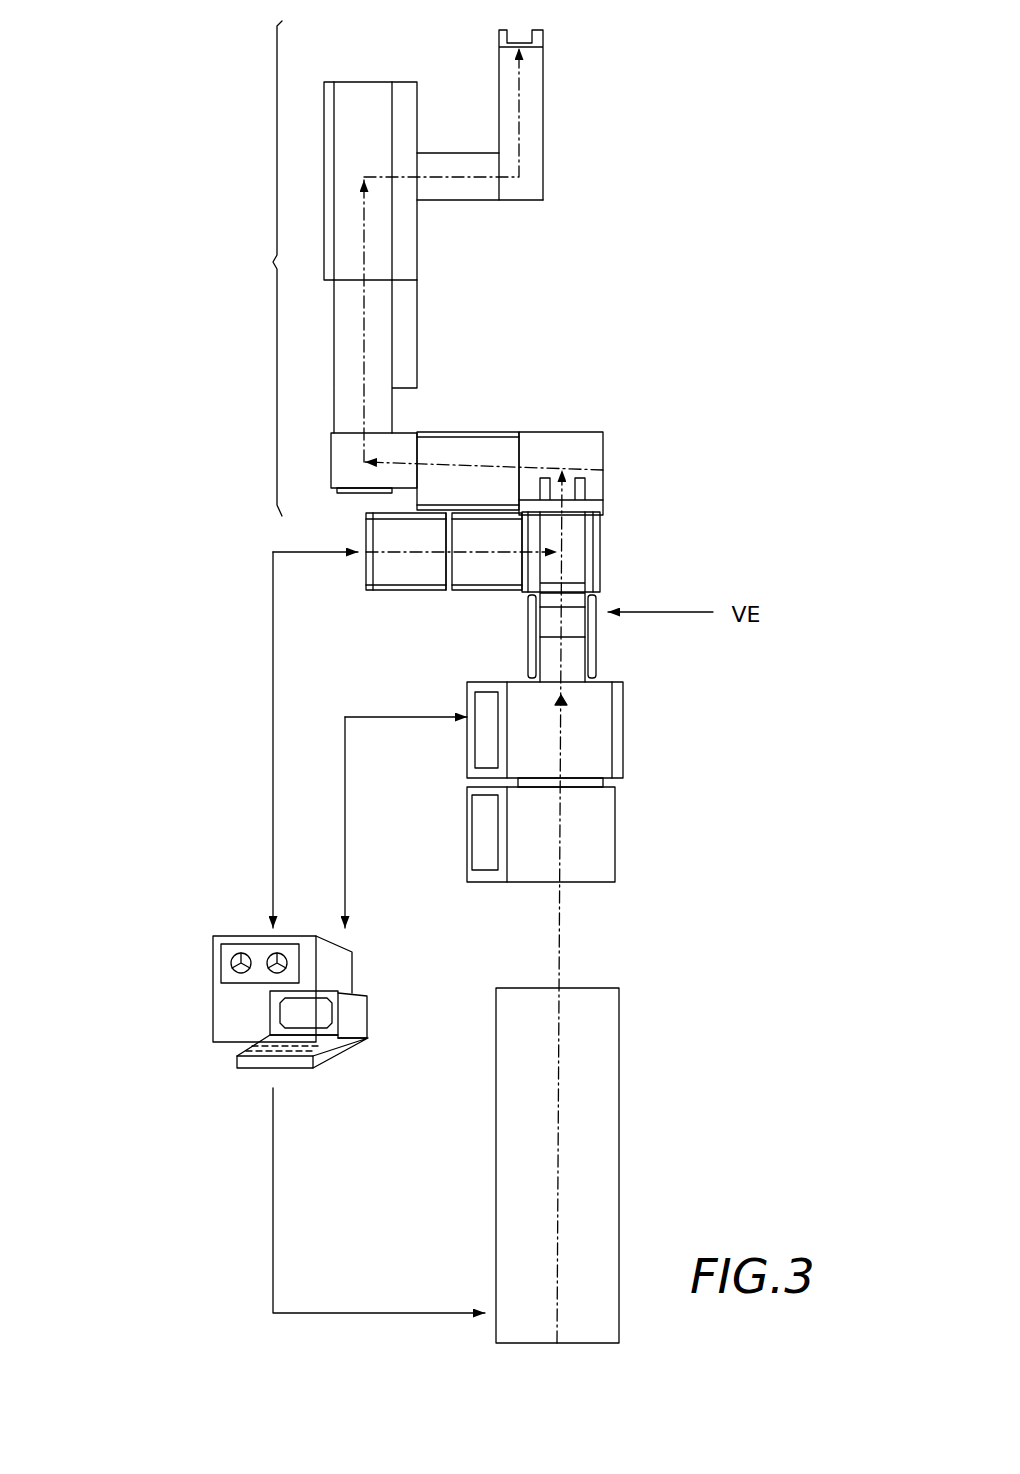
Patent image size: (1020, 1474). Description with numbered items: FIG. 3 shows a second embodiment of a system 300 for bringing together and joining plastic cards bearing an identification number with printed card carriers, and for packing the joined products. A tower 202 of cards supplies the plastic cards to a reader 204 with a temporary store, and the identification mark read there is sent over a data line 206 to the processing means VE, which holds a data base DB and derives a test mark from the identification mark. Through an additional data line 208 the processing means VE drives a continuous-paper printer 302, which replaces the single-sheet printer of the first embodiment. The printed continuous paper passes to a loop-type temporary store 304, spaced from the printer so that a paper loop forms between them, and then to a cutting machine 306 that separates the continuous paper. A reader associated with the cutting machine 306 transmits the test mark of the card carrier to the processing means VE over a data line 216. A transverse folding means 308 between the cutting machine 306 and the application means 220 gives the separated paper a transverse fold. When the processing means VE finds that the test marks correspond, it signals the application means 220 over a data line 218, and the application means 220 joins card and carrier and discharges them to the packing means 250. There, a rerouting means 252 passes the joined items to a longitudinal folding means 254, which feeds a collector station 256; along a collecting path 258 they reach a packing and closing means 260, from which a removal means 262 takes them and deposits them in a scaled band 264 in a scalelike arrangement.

The tower of cards 202 is at (410, 573).
The reader 204 is at (493, 575).
The data line 206 is at (273, 686).
The data line 208 is at (352, 1312).
The data line 216 is at (388, 680).
The data line 218 is at (667, 612).
The application means 220 is at (578, 558).
The packing means 250 is at (452, 260).
The rerouting means 252 is at (565, 440).
The longitudinal folding means 254 is at (480, 450).
The collector station 256 is at (345, 455).
The collecting path 258 is at (375, 342).
The packing and closing means 260 is at (370, 100).
The removal means 262 is at (483, 188).
The scaled band 264 is at (532, 122).
The system 300 is at (233, 1100).
The continuous-paper printer 302 is at (596, 1120).
The loop-type temporary store 304 is at (588, 840).
The cutting machine 306 is at (585, 752).
The transverse folding means 308 is at (603, 667).